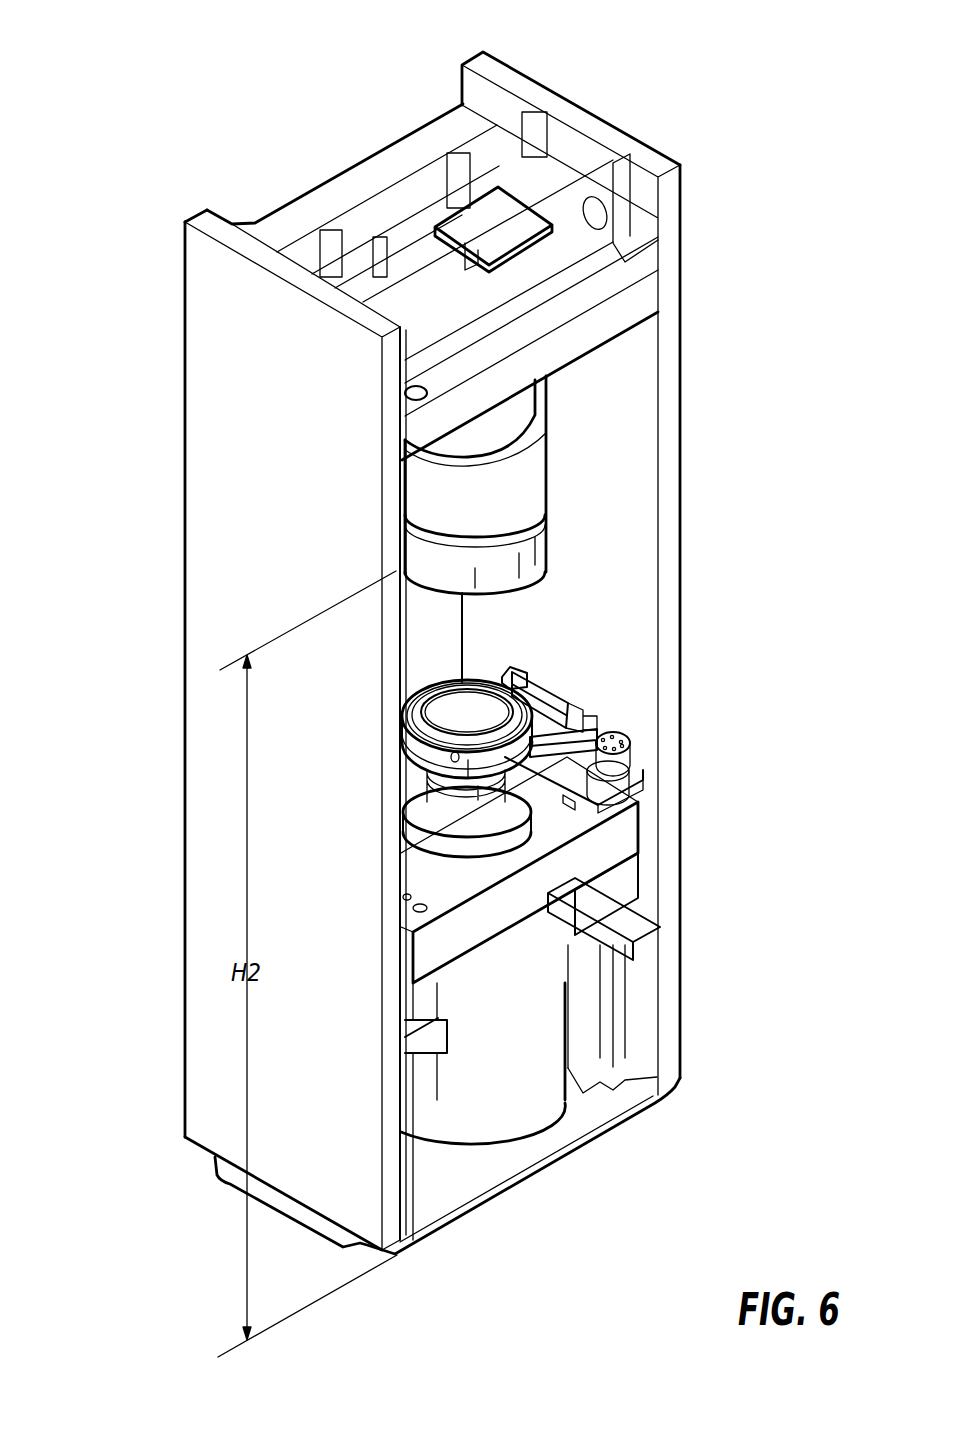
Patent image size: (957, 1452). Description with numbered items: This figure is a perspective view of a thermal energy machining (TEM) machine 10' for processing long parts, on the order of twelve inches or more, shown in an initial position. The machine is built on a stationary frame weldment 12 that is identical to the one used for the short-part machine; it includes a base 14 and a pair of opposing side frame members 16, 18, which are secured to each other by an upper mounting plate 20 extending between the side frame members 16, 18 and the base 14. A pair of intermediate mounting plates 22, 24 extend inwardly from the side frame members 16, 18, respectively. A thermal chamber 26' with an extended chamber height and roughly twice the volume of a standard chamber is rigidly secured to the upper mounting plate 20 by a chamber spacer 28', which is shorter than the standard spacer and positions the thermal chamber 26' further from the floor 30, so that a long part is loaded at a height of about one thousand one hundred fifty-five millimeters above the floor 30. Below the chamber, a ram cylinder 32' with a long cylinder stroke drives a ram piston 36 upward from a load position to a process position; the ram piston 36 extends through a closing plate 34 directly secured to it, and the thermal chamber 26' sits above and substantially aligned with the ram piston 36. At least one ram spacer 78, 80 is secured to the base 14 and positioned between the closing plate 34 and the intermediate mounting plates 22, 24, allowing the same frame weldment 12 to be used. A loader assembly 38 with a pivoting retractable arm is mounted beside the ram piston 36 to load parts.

The TEM machine 10' is at (179, 568).
The frame weldment 12 is at (690, 238).
The base 14 is at (562, 1128).
The side frame member 16 is at (226, 336).
The side frame member 18 is at (682, 430).
The upper mounting plate 20 is at (608, 318).
The intermediate mounting plate 22 is at (420, 1048).
The intermediate mounting plate 24 is at (620, 930).
The thermal chamber 26' is at (328, 481).
The chamber spacer 28' is at (599, 531).
The floor 30 is at (681, 1195).
The ram cylinder 32' is at (578, 1062).
The closing plate 34 is at (617, 836).
The ram piston 36 is at (440, 805).
The loader assembly 38 is at (622, 706).
The ram spacer 78 is at (430, 1003).
The ram spacer 80 is at (618, 878).